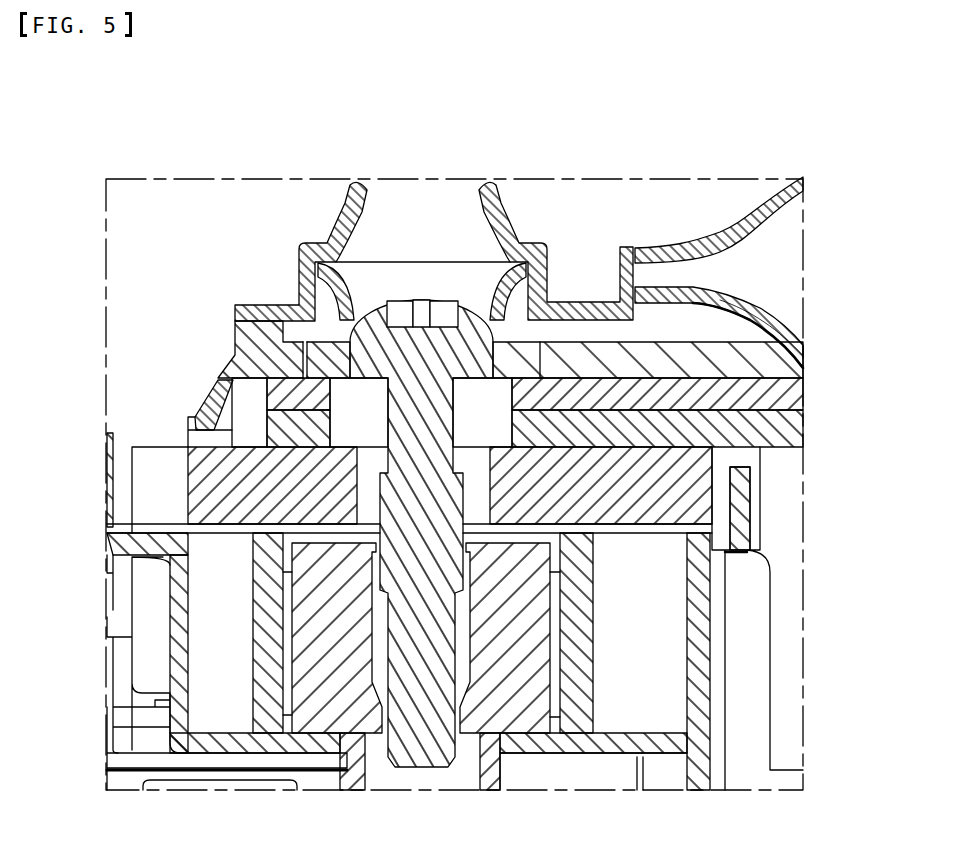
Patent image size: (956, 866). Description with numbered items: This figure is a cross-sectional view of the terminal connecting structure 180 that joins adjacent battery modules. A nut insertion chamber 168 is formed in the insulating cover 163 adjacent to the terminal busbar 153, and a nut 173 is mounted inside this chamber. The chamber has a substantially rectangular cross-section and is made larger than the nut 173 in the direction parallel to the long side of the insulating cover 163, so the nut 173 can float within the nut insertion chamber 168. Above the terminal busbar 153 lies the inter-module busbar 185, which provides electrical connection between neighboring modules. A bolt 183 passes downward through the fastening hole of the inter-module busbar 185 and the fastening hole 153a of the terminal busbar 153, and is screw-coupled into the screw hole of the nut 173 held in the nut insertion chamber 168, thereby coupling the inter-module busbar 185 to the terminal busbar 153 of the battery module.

The terminal busbar 153 is at (223, 483).
The fastening hole 153a is at (370, 447).
The insulating cover 163 is at (234, 745).
The nut insertion chamber 168 is at (557, 620).
The nut 173 is at (518, 697).
The terminal connecting structure 180 is at (708, 222).
The bolt 183 is at (425, 747).
The inter-module busbar 185 is at (718, 432).